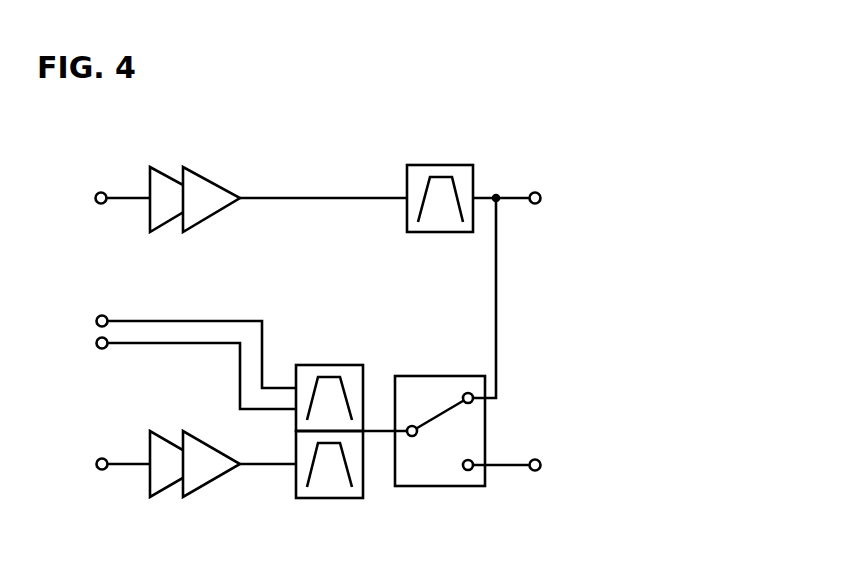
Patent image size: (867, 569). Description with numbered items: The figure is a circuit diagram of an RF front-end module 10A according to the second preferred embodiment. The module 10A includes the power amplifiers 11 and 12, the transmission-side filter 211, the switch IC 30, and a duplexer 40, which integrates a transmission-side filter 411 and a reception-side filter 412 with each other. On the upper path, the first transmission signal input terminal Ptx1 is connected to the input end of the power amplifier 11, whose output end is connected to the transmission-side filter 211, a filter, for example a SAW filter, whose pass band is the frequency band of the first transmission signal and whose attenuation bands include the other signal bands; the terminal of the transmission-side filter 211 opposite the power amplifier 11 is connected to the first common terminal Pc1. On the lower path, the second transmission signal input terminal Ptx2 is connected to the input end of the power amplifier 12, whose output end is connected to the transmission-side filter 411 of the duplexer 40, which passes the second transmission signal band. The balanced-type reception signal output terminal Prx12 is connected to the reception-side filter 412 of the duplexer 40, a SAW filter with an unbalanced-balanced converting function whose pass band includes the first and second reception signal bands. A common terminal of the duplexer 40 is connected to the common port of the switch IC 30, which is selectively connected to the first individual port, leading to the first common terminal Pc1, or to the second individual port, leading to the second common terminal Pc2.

The RF front-end module 10A is at (532, 98).
The power amplifier 11 is at (212, 179).
The power amplifier 12 is at (218, 448).
The transmission-side filter 211 is at (460, 166).
The switch IC 30 is at (410, 377).
The duplexer 40 is at (305, 346).
The transmission-side filter 411 is at (348, 498).
The reception-side filter 412 is at (332, 365).
The first transmission signal input terminal Ptx1 is at (89, 190).
The second transmission signal input terminal Ptx2 is at (89, 456).
The balanced-type reception signal output terminal Prx12 is at (81, 323).
The first common terminal Pc1 is at (549, 187).
The second common terminal Pc2 is at (565, 440).